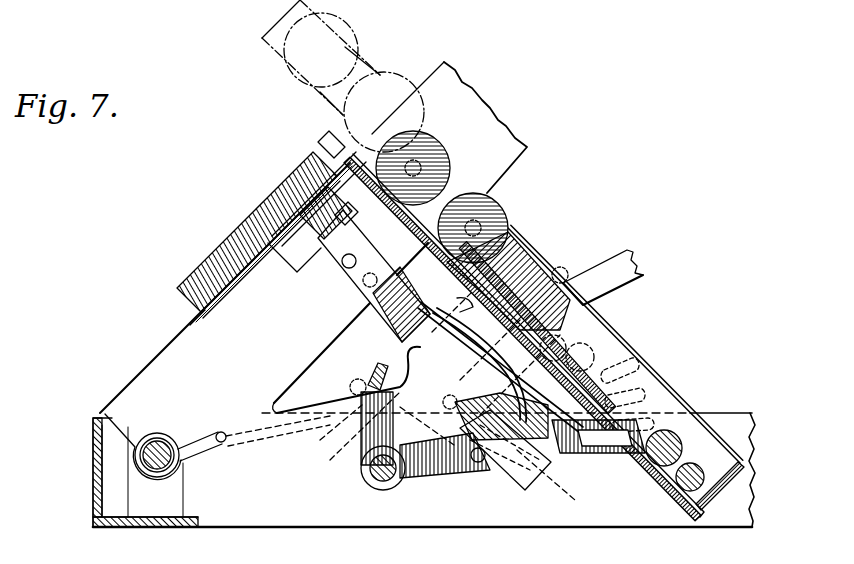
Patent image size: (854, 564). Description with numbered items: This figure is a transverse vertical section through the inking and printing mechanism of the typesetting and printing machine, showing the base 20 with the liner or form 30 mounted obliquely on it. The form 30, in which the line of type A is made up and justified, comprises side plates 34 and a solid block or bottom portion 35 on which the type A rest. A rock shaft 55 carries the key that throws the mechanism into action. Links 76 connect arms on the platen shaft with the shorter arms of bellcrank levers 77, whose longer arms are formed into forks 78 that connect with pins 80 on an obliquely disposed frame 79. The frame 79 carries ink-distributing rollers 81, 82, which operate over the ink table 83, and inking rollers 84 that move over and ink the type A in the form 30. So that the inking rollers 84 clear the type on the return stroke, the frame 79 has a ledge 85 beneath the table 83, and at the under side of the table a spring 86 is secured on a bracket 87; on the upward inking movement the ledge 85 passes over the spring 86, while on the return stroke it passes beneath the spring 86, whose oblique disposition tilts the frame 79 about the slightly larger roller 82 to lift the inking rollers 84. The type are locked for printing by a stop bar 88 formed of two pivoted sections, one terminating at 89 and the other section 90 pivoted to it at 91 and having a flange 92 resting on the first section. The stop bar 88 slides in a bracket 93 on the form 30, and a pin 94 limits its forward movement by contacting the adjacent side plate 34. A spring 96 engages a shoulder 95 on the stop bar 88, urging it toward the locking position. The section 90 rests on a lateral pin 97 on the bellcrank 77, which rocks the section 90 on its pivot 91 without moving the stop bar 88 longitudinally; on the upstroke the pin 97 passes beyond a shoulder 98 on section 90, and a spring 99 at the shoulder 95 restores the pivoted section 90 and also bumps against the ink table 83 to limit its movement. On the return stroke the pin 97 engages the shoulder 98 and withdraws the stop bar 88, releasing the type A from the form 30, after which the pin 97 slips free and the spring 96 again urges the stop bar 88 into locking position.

The base 20 is at (134, 375).
The liner or form 30 is at (213, 246).
The side plates 34 is at (180, 292).
The solid block or bottom portion 35 is at (196, 313).
The rock shaft 55 is at (383, 482).
The links 76 is at (638, 245).
The bellcrank levers 77 is at (366, 435).
The forks 78 is at (600, 455).
The obliquely disposed frame 79 is at (657, 383).
The pins 80 is at (665, 430).
The ink-distributing roller 81 is at (707, 493).
The ink-distributing roller 82 is at (688, 462).
The ink table 83 is at (463, 312).
The inking rollers 84 is at (473, 230).
The ledge 85 is at (672, 492).
The spring 86 is at (570, 368).
The bracket 87 is at (612, 448).
The stop bar 88 is at (347, 268).
The end of first stop bar section 89 is at (490, 362).
The pivoted stop bar section 90 is at (538, 490).
The pivot 91 is at (362, 278).
The flange 92 is at (534, 484).
The bracket 93 is at (292, 266).
The pin 94 is at (325, 219).
The shoulder 95 is at (403, 342).
The spring 96 is at (264, 428).
The lateral pin 97 is at (478, 463).
The shoulder 98 is at (460, 417).
The spring 99 is at (474, 306).
The type A is at (330, 155).